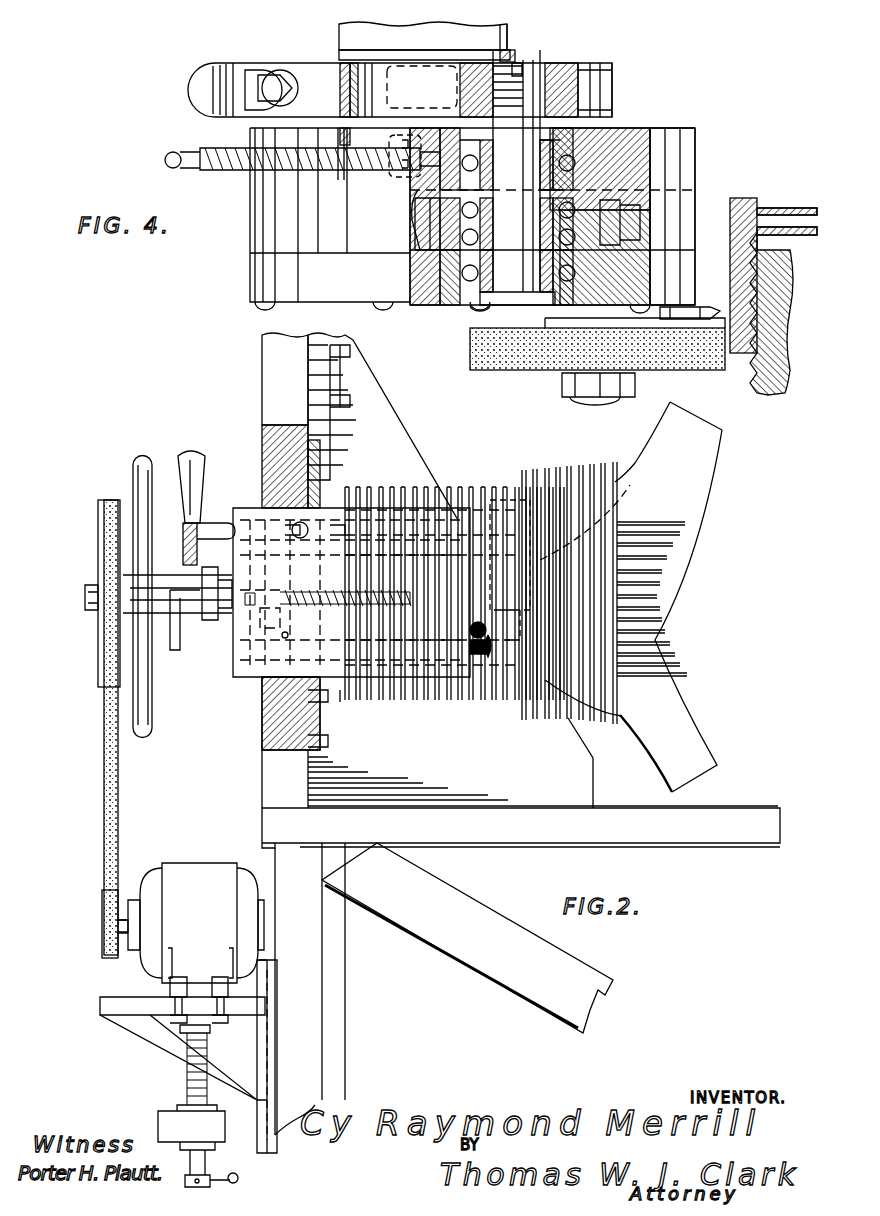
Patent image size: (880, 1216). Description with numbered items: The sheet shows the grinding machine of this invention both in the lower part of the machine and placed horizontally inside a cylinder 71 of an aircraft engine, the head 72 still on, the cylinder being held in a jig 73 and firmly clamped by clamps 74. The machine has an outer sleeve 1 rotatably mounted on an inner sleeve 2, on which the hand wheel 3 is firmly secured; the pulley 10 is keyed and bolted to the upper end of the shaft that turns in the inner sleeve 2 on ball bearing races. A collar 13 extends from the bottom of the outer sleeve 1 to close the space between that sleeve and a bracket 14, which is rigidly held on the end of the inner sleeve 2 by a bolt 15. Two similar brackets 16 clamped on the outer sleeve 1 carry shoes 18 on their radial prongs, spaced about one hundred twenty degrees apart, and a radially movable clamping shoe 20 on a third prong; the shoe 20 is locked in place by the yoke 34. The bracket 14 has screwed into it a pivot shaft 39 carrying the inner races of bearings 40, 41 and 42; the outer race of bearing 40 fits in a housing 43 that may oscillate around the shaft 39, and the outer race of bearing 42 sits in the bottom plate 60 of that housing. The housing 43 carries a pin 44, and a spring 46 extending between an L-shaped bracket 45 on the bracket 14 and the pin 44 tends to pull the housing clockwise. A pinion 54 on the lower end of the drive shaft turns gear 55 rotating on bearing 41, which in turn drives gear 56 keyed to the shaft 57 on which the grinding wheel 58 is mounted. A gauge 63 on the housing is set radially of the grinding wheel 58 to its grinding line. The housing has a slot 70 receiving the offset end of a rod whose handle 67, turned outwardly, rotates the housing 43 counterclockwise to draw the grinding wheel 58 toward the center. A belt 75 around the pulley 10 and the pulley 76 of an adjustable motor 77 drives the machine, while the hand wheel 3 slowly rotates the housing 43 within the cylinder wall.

In FIG. 4, the outer sleeve 1 is at (527, 28).
In FIG. 2, the outer sleeve 1 is at (225, 625).
In FIG. 4, the inner sleeve 2 is at (375, 46).
In FIG. 2, the inner sleeve 2 is at (162, 575).
In FIG. 2, the hand wheel 3 is at (145, 455).
In FIG. 2, the pulley 10 is at (98, 636).
In FIG. 4, the collar 13 is at (520, 54).
In FIG. 4, the bracket 14 is at (612, 80).
In FIG. 4, the bolt 15 is at (280, 72).
In FIG. 2, the brackets or spiders 16 is at (265, 598).
In FIG. 2, the shoes 18 is at (420, 690).
In FIG. 2, the clamping shoe 20 is at (395, 530).
In FIG. 2, the yoke 34 is at (198, 528).
In FIG. 4, the pivot shaft 39 is at (525, 139).
In FIG. 4, the bearing 40 is at (476, 178).
In FIG. 4, the bearing 41 is at (478, 230).
In FIG. 4, the bearing 42 is at (478, 284).
In FIG. 4, the housing 43 is at (695, 128).
In FIG. 2, the housing 43 is at (505, 520).
In FIG. 4, the pin 44 is at (168, 159).
In FIG. 4, the L-shaped bracket 45 is at (390, 92).
In FIG. 4, the spring 46 is at (208, 148).
In FIG. 4, the pinion 54 is at (412, 235).
In FIG. 4, the gear 55 is at (423, 195).
In FIG. 4, the gear 56 is at (620, 213).
In FIG. 4, the shaft 57 is at (590, 405).
In FIG. 4, the grinding wheel 58 is at (468, 350).
In FIG. 2, the grinding wheel 58 is at (578, 522).
In FIG. 4, the bottom plate 60 is at (345, 295).
In FIG. 4, the gauge 63 is at (712, 307).
In FIG. 2, the handle 67 is at (180, 652).
In FIG. 4, the slot 70 is at (340, 180).
In FIG. 4, the cylinder 71 is at (752, 198).
In FIG. 2, the cylinder 71 is at (345, 487).
In FIG. 4, the head 72 is at (770, 391).
In FIG. 2, the head 72 is at (548, 708).
In FIG. 2, the jig 73 is at (505, 832).
In FIG. 2, the clamps 74 is at (330, 440).
In FIG. 2, the belt 75 is at (104, 810).
In FIG. 2, the pulley 76 is at (100, 896).
In FIG. 2, the motor 77 is at (208, 875).